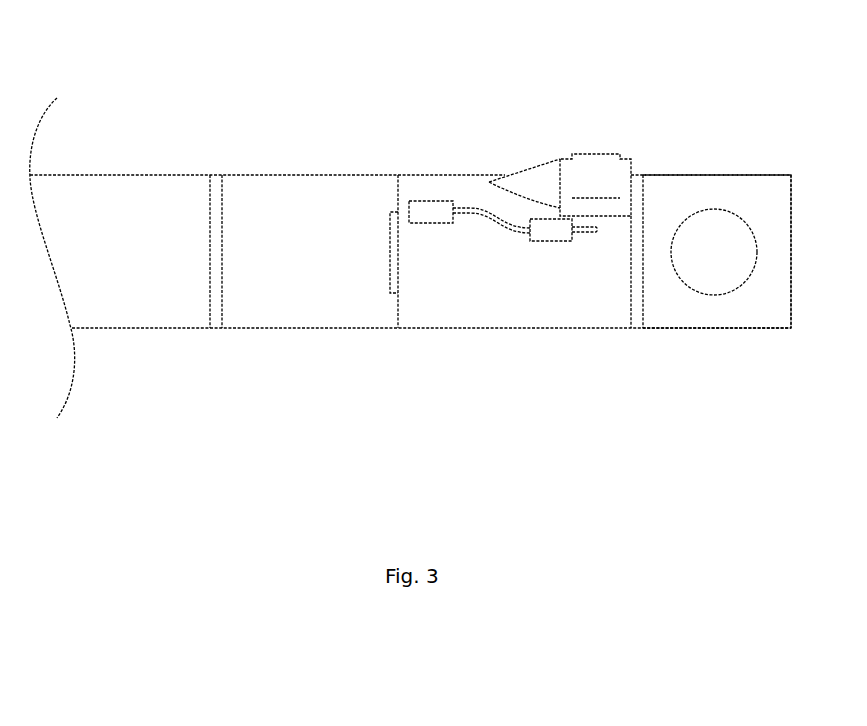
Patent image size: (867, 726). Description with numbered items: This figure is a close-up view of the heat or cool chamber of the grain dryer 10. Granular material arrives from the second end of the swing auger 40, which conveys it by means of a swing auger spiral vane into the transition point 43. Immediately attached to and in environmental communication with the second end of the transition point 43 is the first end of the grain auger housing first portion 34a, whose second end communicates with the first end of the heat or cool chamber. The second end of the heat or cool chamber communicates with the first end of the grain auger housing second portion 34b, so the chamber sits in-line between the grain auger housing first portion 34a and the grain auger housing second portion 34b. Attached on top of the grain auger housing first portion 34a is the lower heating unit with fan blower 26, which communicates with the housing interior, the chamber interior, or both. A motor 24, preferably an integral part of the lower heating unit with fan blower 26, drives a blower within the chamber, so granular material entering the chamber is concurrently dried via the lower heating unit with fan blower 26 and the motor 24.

The grain dryer 10 is at (349, 108).
The motor 24 is at (478, 302).
The lower heating unit with fan blower 26 is at (598, 166).
The grain auger housing first portion 34a is at (637, 329).
The grain auger housing second portion 34b is at (160, 175).
The swing auger 40 is at (733, 282).
The transition point 43 is at (714, 174).